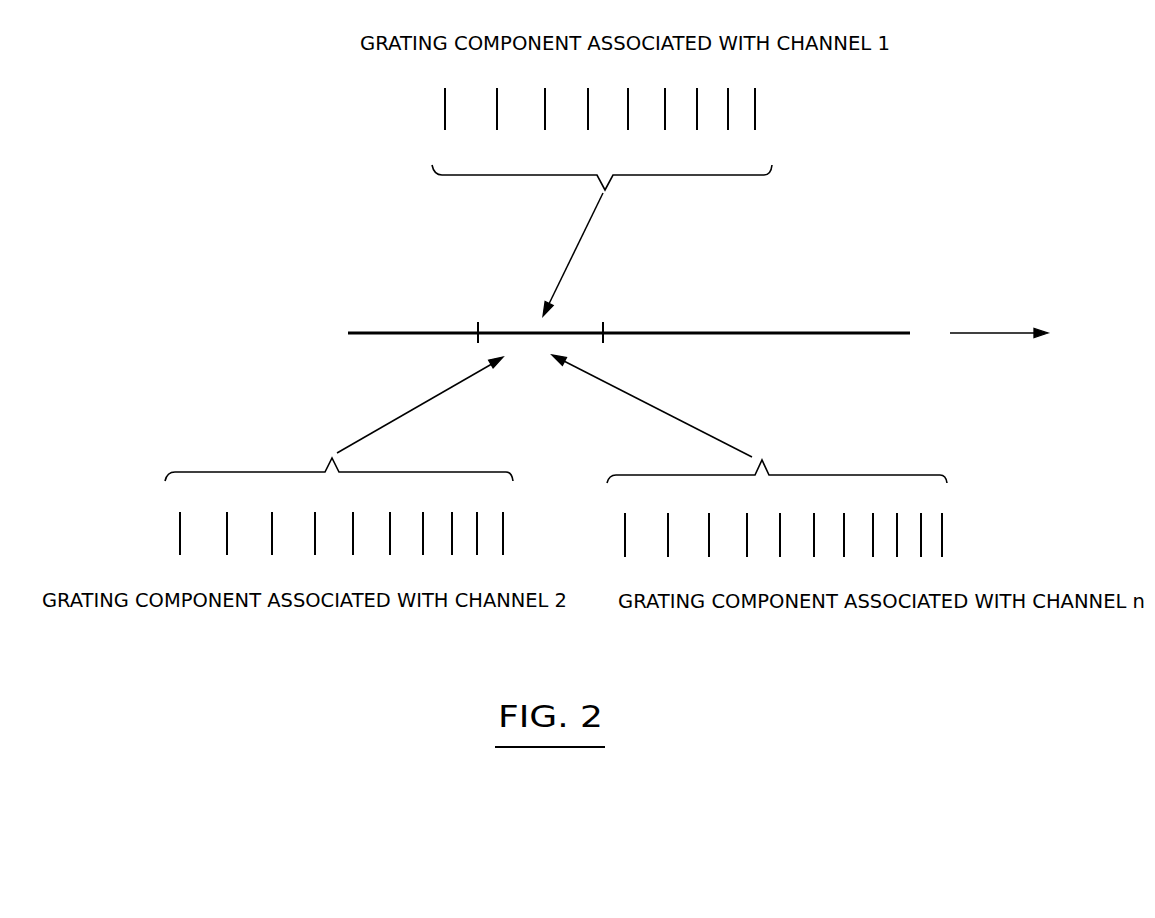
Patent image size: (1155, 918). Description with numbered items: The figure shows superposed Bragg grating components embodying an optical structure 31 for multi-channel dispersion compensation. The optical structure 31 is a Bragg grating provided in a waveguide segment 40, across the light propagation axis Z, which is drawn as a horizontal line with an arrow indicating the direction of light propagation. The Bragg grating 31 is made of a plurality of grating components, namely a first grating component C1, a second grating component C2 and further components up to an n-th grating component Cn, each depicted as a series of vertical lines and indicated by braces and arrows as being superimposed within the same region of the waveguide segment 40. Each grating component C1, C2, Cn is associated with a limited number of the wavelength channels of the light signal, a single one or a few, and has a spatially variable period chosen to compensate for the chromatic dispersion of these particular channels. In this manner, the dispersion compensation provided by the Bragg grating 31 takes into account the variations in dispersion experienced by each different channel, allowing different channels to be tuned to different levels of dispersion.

The optical structure 31 is at (503, 320).
The waveguide segment 40 is at (725, 327).
The grating component C1 is at (410, 111).
The grating component C2 is at (157, 538).
The grating component Cn is at (604, 527).
The light propagation axis Z is at (976, 333).